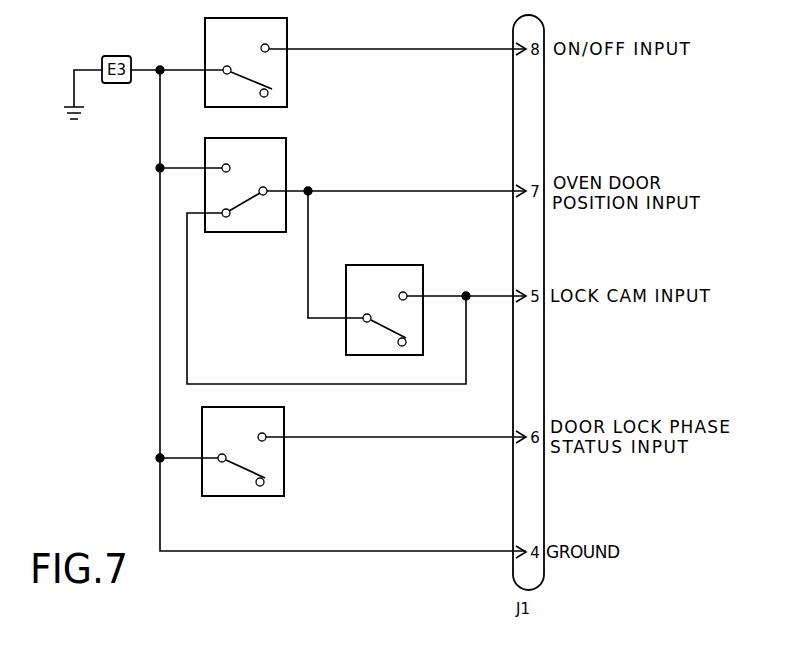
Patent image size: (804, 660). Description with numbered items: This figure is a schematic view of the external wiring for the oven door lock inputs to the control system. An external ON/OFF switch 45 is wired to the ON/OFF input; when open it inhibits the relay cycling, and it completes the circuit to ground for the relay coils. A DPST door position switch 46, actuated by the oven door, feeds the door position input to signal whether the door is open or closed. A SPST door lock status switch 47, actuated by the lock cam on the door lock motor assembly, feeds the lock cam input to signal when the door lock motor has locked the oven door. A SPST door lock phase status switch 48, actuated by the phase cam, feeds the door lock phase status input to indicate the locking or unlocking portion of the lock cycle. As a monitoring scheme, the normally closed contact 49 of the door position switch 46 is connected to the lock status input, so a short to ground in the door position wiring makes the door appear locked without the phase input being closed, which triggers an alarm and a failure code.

The external ON/OFF switch 45 is at (205, 33).
The door position switch 46 is at (275, 208).
The door lock status switch 47 is at (383, 265).
The door lock phase status switch 48 is at (284, 458).
The normally closed contact 49 is at (228, 217).